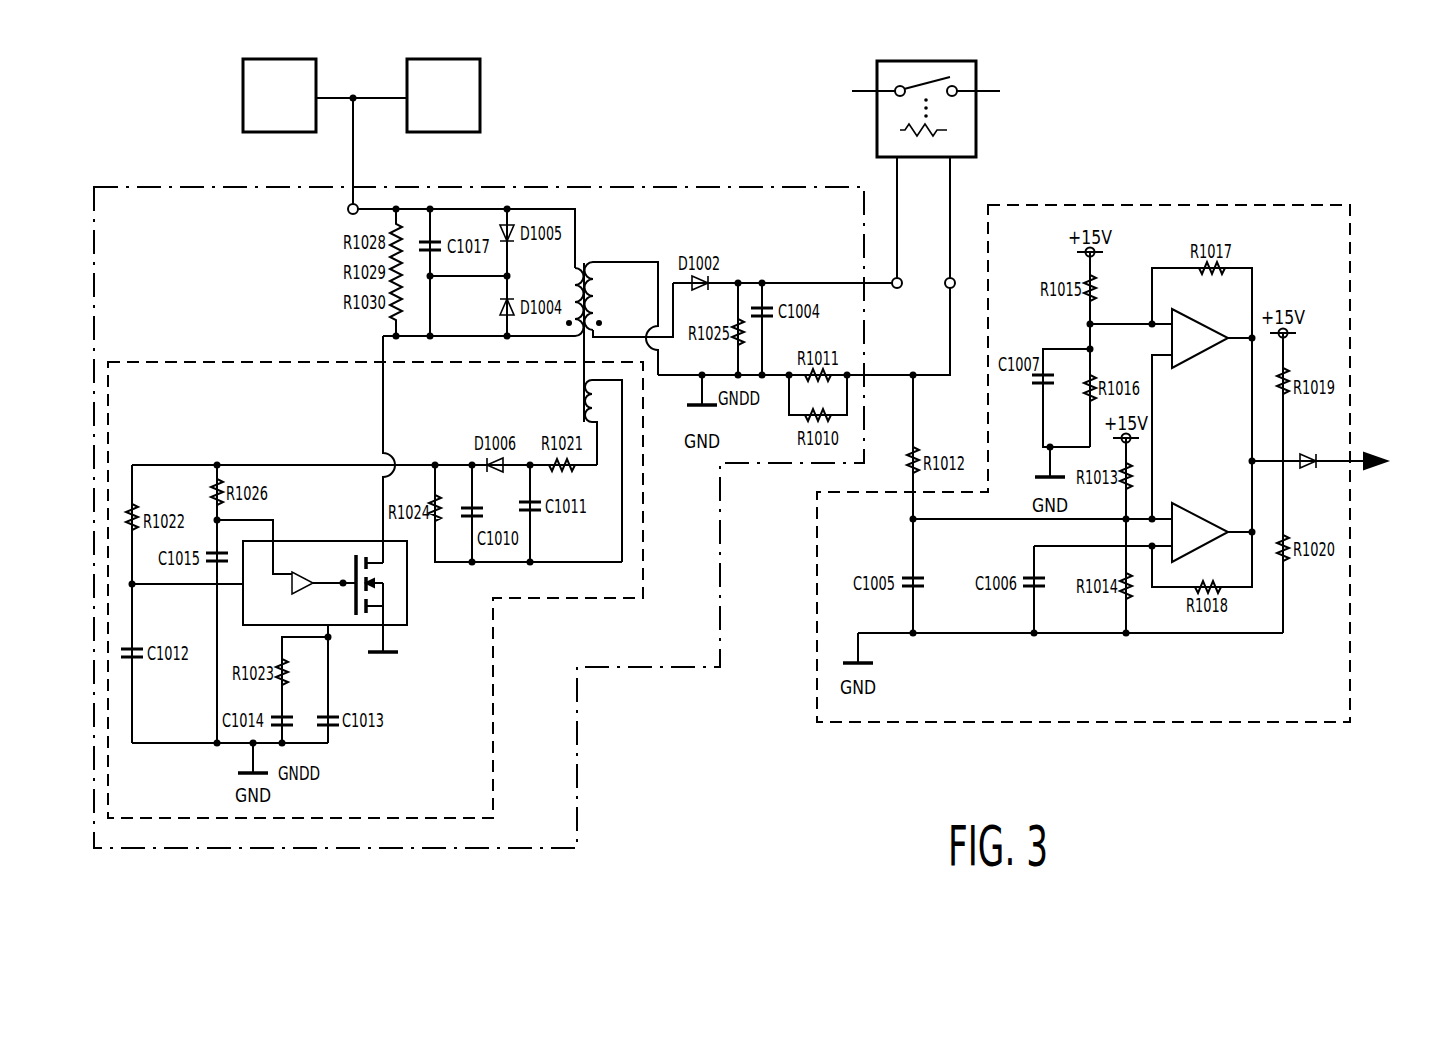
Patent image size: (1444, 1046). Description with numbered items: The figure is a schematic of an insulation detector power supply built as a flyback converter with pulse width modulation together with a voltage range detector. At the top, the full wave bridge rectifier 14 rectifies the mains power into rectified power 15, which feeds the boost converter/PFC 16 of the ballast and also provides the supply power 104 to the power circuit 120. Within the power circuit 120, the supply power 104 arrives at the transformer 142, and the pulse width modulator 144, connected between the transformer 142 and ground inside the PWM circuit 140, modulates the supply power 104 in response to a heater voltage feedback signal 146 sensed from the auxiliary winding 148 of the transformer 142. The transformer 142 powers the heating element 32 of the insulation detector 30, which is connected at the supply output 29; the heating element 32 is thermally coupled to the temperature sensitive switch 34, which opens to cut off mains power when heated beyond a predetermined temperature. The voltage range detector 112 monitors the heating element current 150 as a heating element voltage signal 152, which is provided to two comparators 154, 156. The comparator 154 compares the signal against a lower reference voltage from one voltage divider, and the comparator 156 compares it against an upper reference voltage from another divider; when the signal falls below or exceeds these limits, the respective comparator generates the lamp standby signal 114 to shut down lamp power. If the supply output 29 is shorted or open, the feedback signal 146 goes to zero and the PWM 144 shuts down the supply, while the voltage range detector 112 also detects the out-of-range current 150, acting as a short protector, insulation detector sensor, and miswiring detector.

The full wave bridge rectifier 14 is at (294, 110).
The boost converter/power factor controller (PFC) 16 is at (457, 110).
The rectified power 15 is at (350, 90).
The supply power 104 is at (355, 158).
The transformer 142 is at (588, 240).
The insulation detector 30 is at (932, 98).
The temperature sensitive switch 34 is at (960, 83).
The heating element 32 is at (940, 121).
The supply output 29 is at (899, 278).
The voltage range detector 112 is at (1148, 206).
The lamp standby signal 114 is at (1356, 458).
The heater voltage feedback signal 146 is at (300, 465).
The auxiliary winding 148 is at (590, 385).
The heating element current 150 is at (916, 410).
The heating element voltage signal 152 is at (970, 521).
The comparator 154 is at (1195, 357).
The comparator 156 is at (1183, 503).
The pulse width modulator (PWM) circuit 140 is at (508, 590).
The pulse width modulator (PWM) 144 is at (410, 632).
The power circuit 120 is at (565, 729).